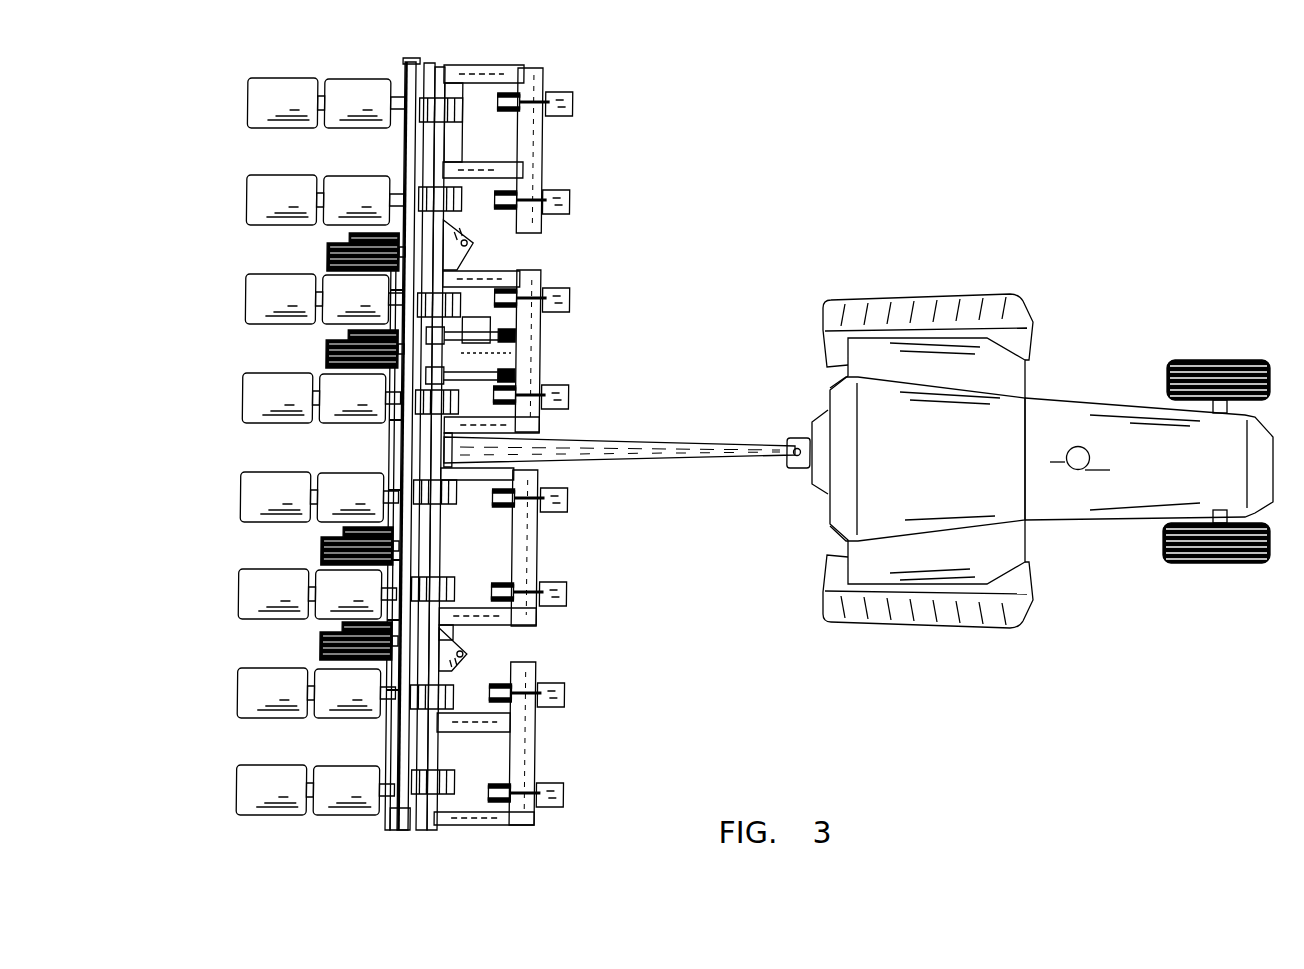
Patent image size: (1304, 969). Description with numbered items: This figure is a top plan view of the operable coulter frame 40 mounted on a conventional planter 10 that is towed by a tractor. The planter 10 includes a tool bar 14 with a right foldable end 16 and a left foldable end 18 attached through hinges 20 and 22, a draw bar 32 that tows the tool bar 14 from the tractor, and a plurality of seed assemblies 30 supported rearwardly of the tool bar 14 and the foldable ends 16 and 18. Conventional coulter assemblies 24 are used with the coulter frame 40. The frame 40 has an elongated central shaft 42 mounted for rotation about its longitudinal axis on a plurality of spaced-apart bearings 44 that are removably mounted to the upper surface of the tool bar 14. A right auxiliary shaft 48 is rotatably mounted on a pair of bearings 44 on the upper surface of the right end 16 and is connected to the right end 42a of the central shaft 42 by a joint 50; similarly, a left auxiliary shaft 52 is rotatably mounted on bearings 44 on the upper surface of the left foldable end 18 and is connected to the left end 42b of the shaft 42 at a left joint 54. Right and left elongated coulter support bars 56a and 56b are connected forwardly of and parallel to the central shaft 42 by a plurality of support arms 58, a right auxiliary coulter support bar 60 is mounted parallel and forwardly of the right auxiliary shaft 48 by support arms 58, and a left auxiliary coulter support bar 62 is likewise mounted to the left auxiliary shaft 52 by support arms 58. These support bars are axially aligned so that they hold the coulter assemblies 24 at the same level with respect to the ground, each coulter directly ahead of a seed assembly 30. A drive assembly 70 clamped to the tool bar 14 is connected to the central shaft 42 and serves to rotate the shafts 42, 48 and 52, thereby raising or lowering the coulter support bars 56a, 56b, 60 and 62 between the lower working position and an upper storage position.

The planter 10 is at (311, 467).
The tool bar 14 is at (421, 449).
The right foldable end 16 is at (423, 153).
The left foldable end 18 is at (419, 732).
The hinge 20 is at (472, 246).
The hinge 22 is at (469, 652).
The coulter assembly 24 is at (567, 192).
The seed assembly 30 is at (256, 97).
The draw bar 32 is at (608, 443).
The operable coulter frame 40 is at (648, 131).
The central shaft 42 is at (521, 437).
The right end of shaft 42a is at (442, 265).
The left end of shaft 42b is at (446, 623).
The bearing 44 is at (459, 108).
The right auxiliary shaft 48 is at (442, 134).
The joint 50 is at (446, 237).
The left auxiliary shaft 52 is at (430, 749).
The left joint 54 is at (426, 660).
The right coulter support bar 56a is at (500, 333).
The left coulter support bar 56b is at (538, 558).
The support arm 58 is at (470, 604).
The right auxiliary coulter support bar 60 is at (541, 80).
The left auxiliary coulter support bar 62 is at (530, 818).
The drive assembly 70 is at (318, 345).